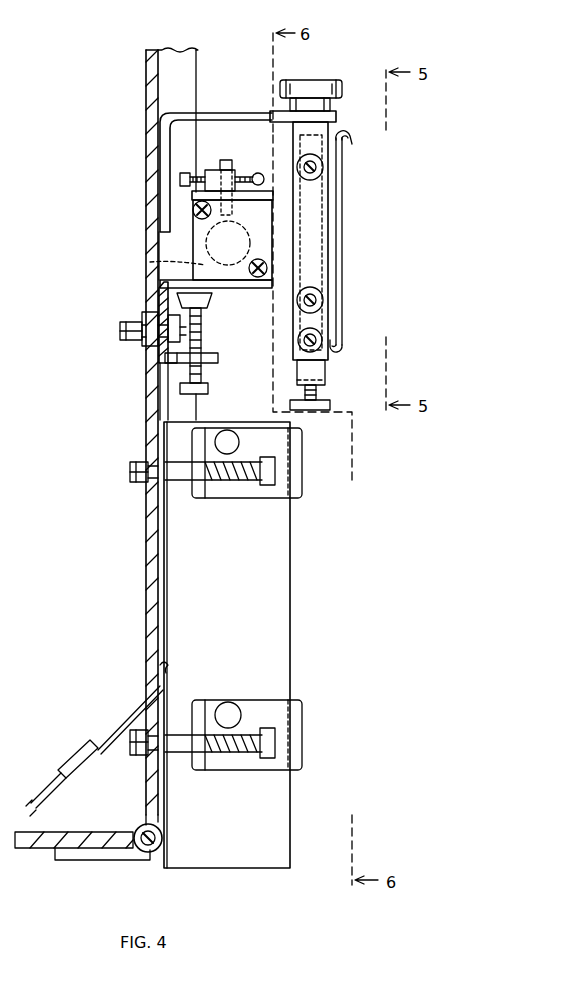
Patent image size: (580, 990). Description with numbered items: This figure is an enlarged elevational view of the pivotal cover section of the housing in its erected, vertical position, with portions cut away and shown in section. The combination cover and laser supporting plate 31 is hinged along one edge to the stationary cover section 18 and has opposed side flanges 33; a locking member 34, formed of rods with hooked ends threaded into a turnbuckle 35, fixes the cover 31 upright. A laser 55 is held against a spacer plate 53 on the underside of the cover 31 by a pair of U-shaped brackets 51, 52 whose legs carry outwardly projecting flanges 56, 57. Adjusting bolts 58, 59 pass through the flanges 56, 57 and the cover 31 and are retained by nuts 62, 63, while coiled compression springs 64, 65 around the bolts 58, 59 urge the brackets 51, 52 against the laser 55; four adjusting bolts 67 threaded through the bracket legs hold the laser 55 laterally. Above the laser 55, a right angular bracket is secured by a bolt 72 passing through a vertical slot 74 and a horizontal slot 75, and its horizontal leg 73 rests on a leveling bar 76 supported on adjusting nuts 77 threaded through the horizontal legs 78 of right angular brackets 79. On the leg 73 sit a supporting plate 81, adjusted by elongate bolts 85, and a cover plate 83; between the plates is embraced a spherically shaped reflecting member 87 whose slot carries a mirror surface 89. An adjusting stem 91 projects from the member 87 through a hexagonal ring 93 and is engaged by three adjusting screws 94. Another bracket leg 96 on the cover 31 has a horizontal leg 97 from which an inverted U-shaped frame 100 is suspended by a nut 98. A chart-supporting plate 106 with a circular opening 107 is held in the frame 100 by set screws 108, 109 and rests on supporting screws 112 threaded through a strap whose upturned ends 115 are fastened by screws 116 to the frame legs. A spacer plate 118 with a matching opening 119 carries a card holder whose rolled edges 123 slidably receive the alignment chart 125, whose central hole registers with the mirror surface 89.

The stationary cover section 18 is at (82, 830).
The combination cover and laser supporting plate 31 is at (146, 84).
The side flanges 33 is at (196, 84).
The locking members 34 is at (114, 712).
The turnbuckle 35 is at (74, 754).
The U-shaped bracket 51 is at (302, 480).
The U-shaped bracket 52 is at (302, 744).
The spacer plate 53 is at (146, 596).
The laser 55 is at (290, 590).
The outwardly projecting flange 56 is at (200, 498).
The outwardly projecting flange 57 is at (200, 770).
The adjusting bolts 58 is at (270, 486).
The adjusting bolts 59 is at (270, 760).
The nuts 62 is at (134, 484).
The nuts 63 is at (136, 756).
The coiled compression springs 64 is at (252, 484).
The coiled compression springs 65 is at (248, 734).
The adjusting bolts 67 is at (216, 444).
The bolt 72 is at (120, 326).
The bracket leg 73 is at (245, 294).
The vertical slot 74 is at (158, 296).
The horizontal slot 75 is at (142, 338).
The leveling bar 76 is at (212, 302).
The adjusting nuts 77 is at (201, 340).
The horizontally disposed legs 78 is at (208, 362).
The right angular brackets 79 is at (160, 380).
The supporting plate 81 is at (195, 236).
The cover plate 83 is at (192, 196).
The elongate bolts 85 is at (195, 210).
The spherically shaped reflecting member 87 is at (150, 262).
The mirror surface 89 is at (236, 226).
The cylindrical adjusting stem 91 is at (228, 170).
The hexagonally-shaped ring 93 is at (221, 170).
The adjusting screws 94 is at (180, 178).
The bracket leg 96 is at (160, 128).
The horizontally disposed leg 97 is at (336, 112).
The nut 98 is at (310, 78).
The inverted U-shaped frame 100 is at (328, 272).
The chart-supporting plate 106 is at (336, 268).
The circular opening 107 is at (332, 224).
The set screw 108 is at (312, 165).
The set screw 109 is at (312, 302).
The supporting screw 112 is at (330, 402).
The upwardly bent ends 115 is at (325, 374).
The screws 116 is at (312, 338).
The spacer plate 118 is at (338, 350).
The circular opening 119 is at (332, 246).
The rolled edges 123 is at (352, 140).
The alignment chart 125 is at (343, 187).